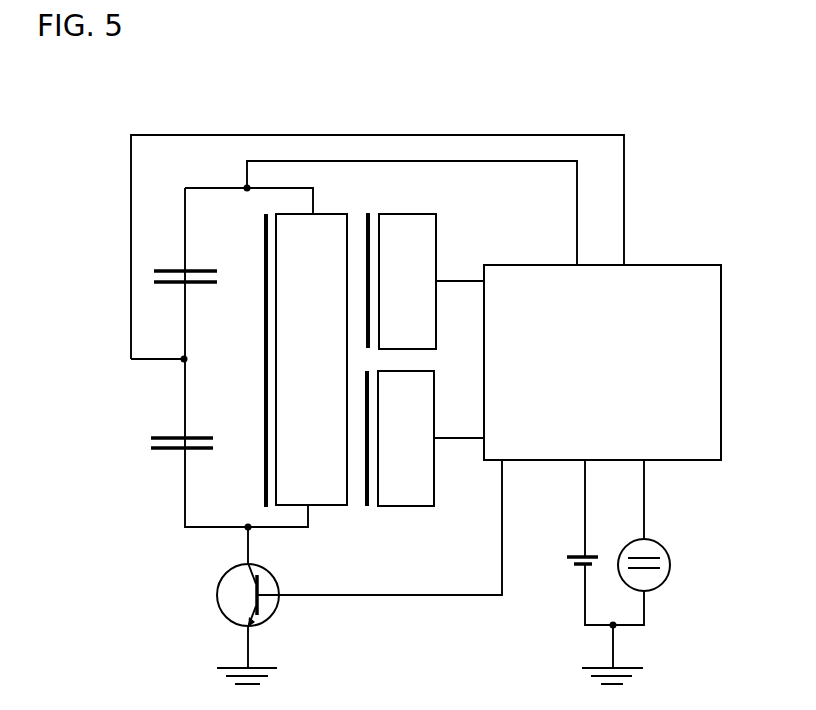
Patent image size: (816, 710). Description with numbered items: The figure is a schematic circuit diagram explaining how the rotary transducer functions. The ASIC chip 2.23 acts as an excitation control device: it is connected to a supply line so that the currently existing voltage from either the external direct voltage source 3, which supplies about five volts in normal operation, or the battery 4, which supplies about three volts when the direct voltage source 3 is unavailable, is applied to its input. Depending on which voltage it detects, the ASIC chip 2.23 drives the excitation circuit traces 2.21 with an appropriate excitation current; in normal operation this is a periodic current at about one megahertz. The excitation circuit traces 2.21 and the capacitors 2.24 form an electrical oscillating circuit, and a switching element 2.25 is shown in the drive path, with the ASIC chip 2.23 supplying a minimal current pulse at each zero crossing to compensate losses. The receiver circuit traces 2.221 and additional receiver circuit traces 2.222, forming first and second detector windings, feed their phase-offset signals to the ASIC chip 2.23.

The excitation circuit traces 2.21 is at (306, 360).
The receiver circuit traces 2.221 is at (426, 281).
The additional receiver circuit traces 2.222 is at (425, 438).
The ASIC chip 2.23 is at (602, 362).
The capacitors 2.24 is at (192, 269).
The transistor 2.25 is at (224, 591).
The battery 4 is at (575, 563).
The direct voltage source 3 is at (657, 587).